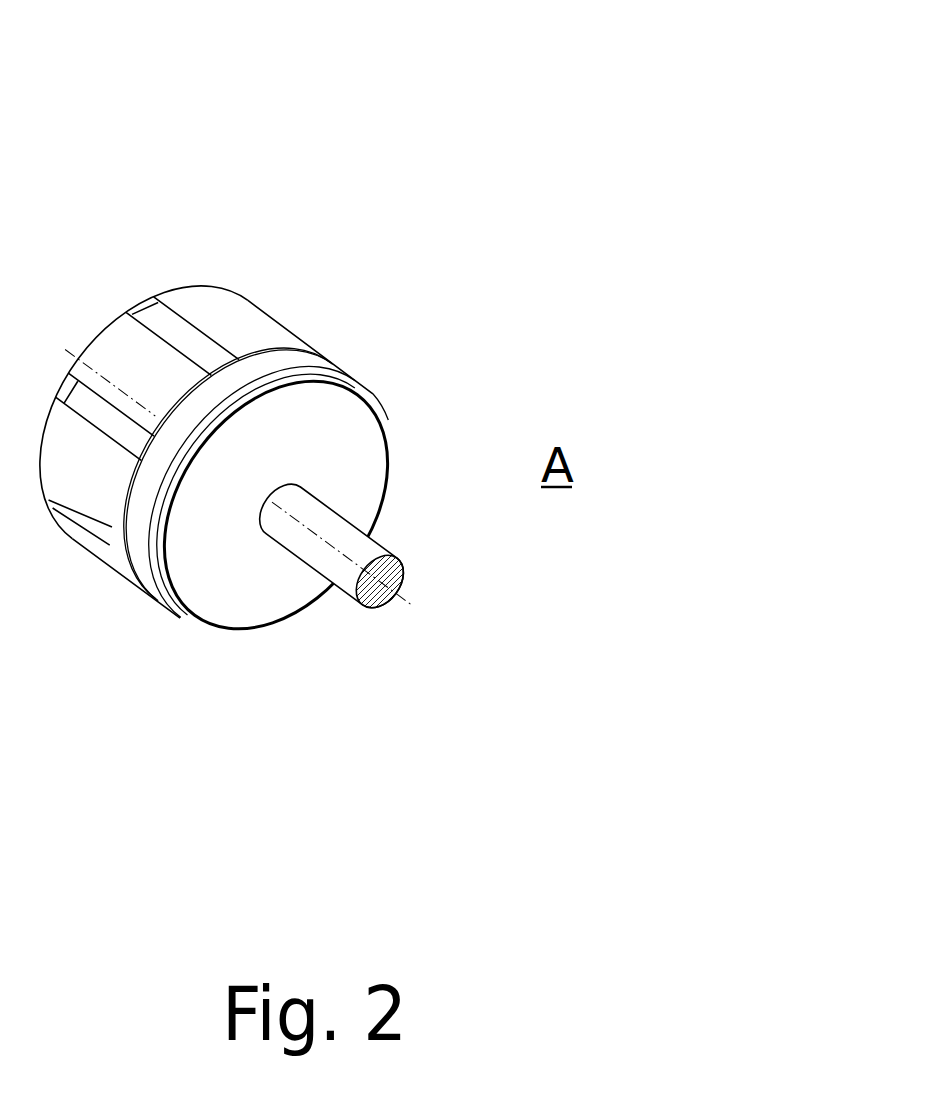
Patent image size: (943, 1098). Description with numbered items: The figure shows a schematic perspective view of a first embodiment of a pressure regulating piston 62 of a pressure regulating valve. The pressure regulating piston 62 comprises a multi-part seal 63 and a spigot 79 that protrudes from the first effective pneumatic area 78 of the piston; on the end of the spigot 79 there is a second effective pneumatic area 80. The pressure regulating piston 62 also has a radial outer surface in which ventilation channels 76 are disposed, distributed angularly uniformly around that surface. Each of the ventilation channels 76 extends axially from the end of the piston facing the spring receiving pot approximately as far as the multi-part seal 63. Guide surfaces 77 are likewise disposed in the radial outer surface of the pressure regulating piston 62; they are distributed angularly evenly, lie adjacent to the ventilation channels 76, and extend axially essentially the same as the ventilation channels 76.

The pressure regulating piston 62 is at (388, 402).
The multi-part seal 63 is at (153, 462).
The ventilation channels 76 is at (92, 407).
The guide surfaces 77 is at (220, 314).
The first effective pneumatic area 78 is at (318, 418).
The spigot 79 is at (330, 559).
The second effective pneumatic area 80 is at (380, 582).